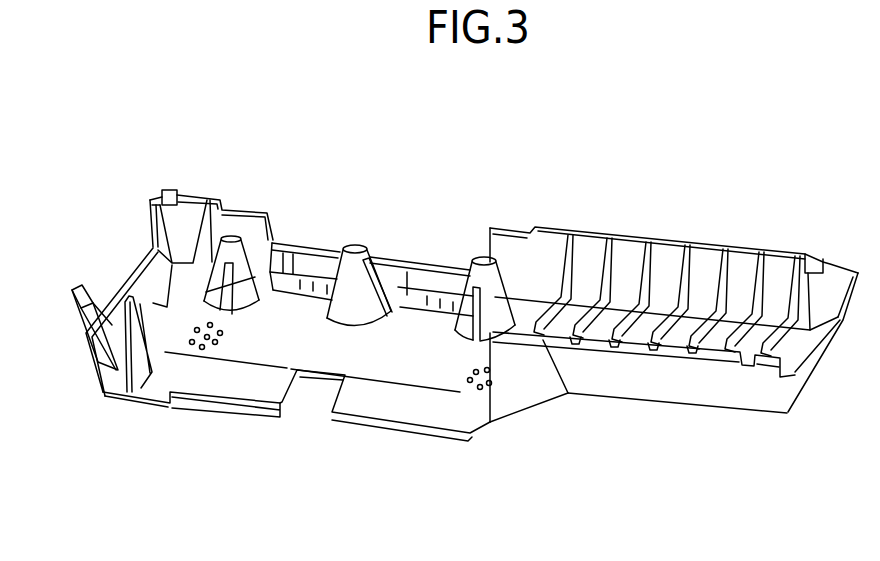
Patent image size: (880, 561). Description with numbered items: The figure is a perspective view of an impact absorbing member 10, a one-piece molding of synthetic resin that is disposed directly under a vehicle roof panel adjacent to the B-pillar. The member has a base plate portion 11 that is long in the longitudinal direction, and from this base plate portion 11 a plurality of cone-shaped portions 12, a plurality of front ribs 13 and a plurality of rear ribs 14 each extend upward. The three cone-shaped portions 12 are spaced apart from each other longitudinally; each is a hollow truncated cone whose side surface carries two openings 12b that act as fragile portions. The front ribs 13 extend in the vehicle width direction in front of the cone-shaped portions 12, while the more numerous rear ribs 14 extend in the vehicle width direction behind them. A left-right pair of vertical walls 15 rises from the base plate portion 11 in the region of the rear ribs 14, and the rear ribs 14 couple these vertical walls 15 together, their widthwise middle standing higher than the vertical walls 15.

The impact absorbing member 10 is at (630, 140).
The base plate portion 11 is at (270, 350).
The cone-shaped portion 12 is at (243, 307).
The opening 12b is at (253, 280).
The front rib 13 is at (165, 313).
The rear rib 14 is at (562, 313).
The vertical wall 15 is at (190, 192).